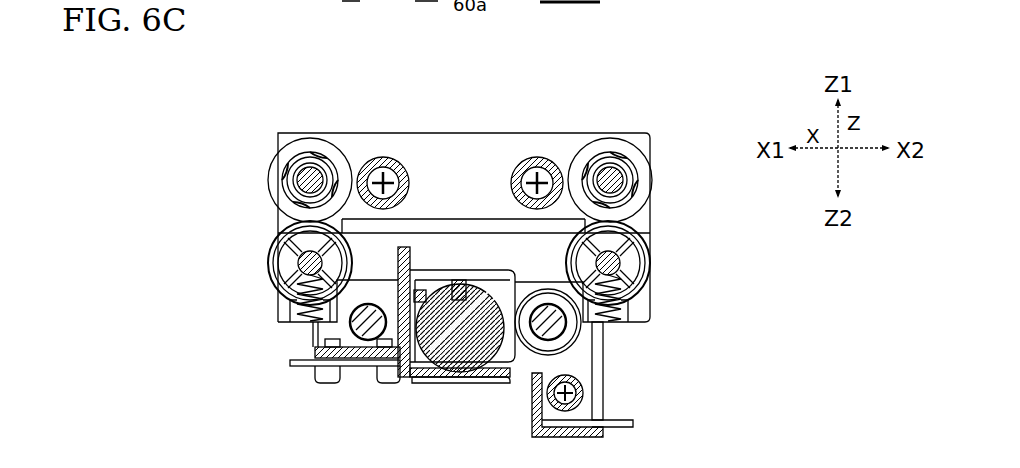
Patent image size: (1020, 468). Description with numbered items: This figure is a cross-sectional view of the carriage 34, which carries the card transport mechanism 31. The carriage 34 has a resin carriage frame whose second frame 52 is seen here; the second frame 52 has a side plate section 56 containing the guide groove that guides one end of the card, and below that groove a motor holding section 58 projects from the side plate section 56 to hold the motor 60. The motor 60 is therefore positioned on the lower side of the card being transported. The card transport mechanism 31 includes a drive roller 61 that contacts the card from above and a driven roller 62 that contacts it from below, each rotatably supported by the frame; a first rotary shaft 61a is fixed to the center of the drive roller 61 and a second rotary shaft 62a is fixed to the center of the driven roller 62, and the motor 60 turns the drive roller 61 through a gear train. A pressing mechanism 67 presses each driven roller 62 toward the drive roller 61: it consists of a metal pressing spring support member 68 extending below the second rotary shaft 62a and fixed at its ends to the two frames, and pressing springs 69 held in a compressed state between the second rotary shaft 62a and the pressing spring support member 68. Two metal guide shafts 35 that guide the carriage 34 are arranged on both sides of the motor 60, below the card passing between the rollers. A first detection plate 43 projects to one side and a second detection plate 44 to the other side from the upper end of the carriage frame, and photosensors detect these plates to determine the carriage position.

The card transport mechanism 31 is at (245, 215).
The carriage 34 is at (262, 127).
The guide shaft 35 is at (361, 378).
The first detection plate 43 is at (300, 366).
The second detection plate 44 is at (626, 424).
The second frame 52 is at (538, 127).
The side plate section 56 is at (472, 150).
The motor holding section 58 is at (406, 252).
The motor 60 is at (458, 358).
The drive roller 61 is at (282, 157).
The first rotary shaft 61a is at (297, 179).
The driven roller 62 is at (278, 242).
The second rotary shaft 62a is at (300, 265).
The pressing mechanism 67 is at (210, 292).
The pressing spring support member 68 is at (303, 326).
The pressing spring 69 is at (288, 292).